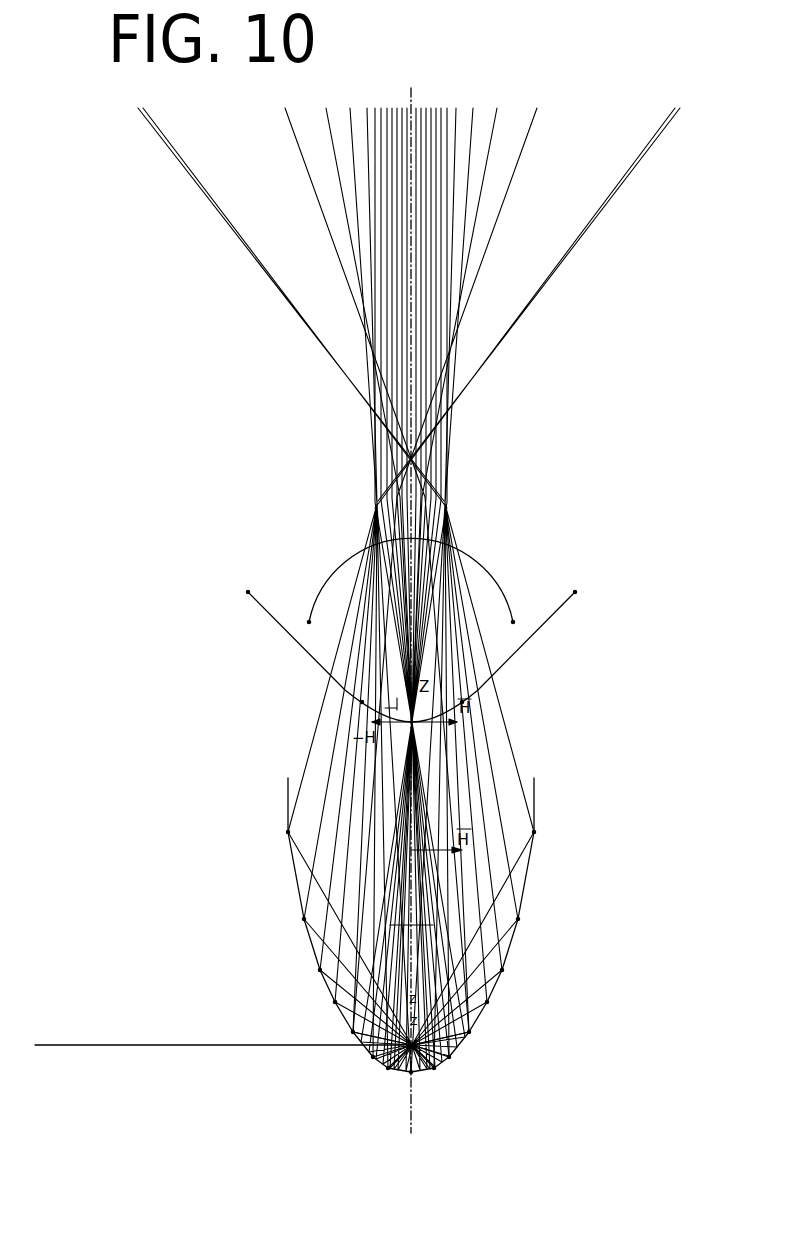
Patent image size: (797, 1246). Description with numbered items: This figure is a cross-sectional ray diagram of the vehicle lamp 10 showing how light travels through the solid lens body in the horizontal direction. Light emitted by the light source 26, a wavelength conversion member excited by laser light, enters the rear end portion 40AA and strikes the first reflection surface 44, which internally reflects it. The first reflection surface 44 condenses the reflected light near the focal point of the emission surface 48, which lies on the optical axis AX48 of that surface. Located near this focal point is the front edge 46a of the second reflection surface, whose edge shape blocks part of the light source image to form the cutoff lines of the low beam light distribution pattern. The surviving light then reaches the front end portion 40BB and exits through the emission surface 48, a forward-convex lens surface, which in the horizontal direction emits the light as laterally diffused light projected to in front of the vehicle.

The vehicle lamp (lamp unit 40) 10 is at (276, 534).
The light source 26 is at (403, 1058).
The first reflection surface 44 is at (298, 890).
The front edge 46a is at (290, 598).
The emission surface 48 is at (466, 512).
The optical axis of projection lens AX48 is at (411, 313).
The rear end portion 40AA is at (526, 1026).
The front end portion 40BB is at (562, 478).